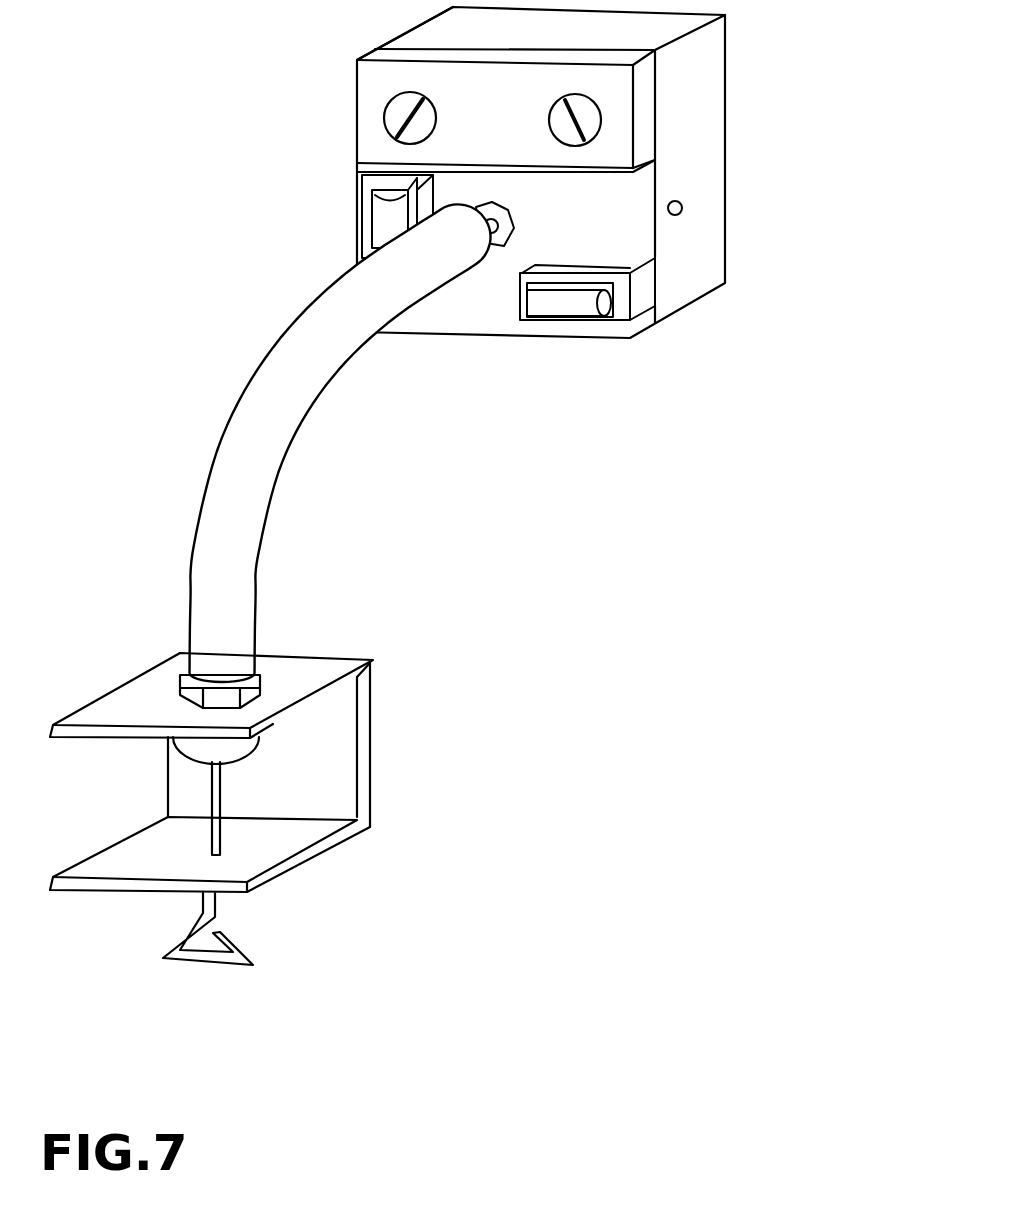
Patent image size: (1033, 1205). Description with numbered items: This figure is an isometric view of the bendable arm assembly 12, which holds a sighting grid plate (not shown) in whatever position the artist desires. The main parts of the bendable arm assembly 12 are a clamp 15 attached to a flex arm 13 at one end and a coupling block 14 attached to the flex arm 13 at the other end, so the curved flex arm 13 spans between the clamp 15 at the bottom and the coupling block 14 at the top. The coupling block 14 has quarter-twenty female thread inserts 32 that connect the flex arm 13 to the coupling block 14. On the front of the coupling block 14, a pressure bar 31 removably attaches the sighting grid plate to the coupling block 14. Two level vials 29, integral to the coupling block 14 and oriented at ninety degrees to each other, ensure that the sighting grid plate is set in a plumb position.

The bendable arm assembly 12 is at (283, 443).
The flex arm 13 is at (227, 409).
The coupling block 14 is at (735, 92).
The clamp 15 is at (373, 688).
The level vials 29 is at (387, 213).
The pressure bar 31 is at (372, 130).
The female thread inserts 32 is at (684, 206).